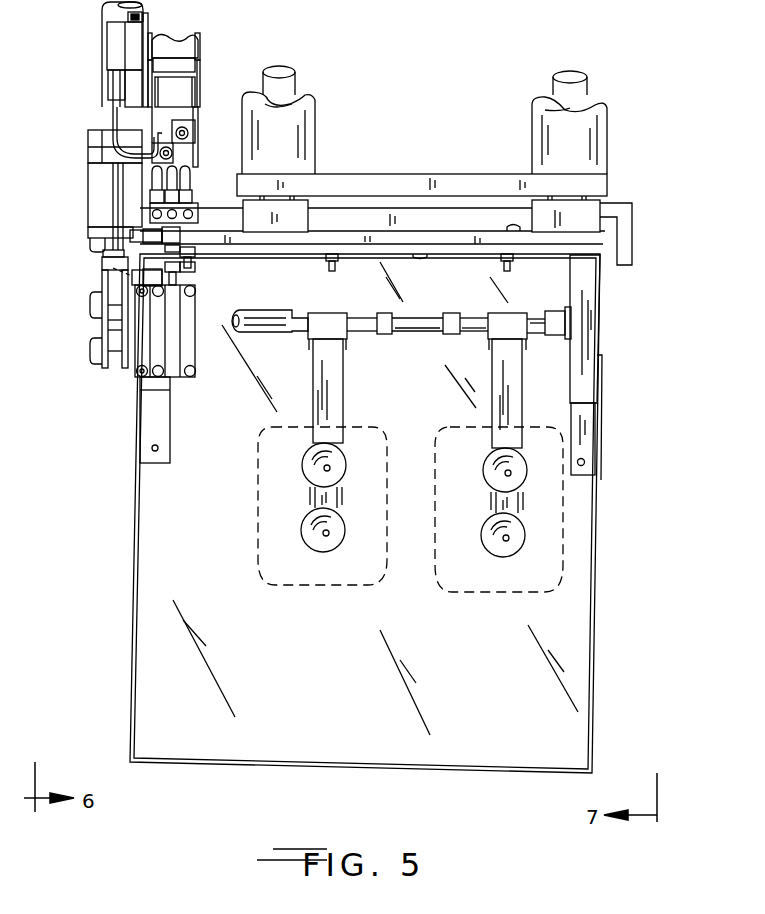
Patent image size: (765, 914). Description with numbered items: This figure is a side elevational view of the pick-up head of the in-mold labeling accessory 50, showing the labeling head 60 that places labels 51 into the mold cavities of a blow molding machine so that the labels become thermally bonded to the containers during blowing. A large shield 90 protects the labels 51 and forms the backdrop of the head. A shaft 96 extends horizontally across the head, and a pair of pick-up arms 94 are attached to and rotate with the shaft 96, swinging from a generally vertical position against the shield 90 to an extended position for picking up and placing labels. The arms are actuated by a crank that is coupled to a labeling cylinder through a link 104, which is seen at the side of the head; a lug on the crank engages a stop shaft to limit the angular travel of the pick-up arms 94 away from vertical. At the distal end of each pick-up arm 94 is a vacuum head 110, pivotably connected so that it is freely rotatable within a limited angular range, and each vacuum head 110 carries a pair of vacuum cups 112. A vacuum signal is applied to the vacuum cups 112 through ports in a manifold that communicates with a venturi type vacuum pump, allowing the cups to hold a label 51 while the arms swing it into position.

The in-mold labeling accessory 50 is at (377, 117).
The label 51 is at (300, 585).
The labeling head 60 is at (606, 335).
The shield 90 is at (596, 700).
The pick-up arm 94 is at (345, 405).
The shaft 96 is at (418, 312).
The link 104 is at (98, 333).
The vacuum head 110 is at (308, 505).
The vacuum cup 112 is at (312, 552).